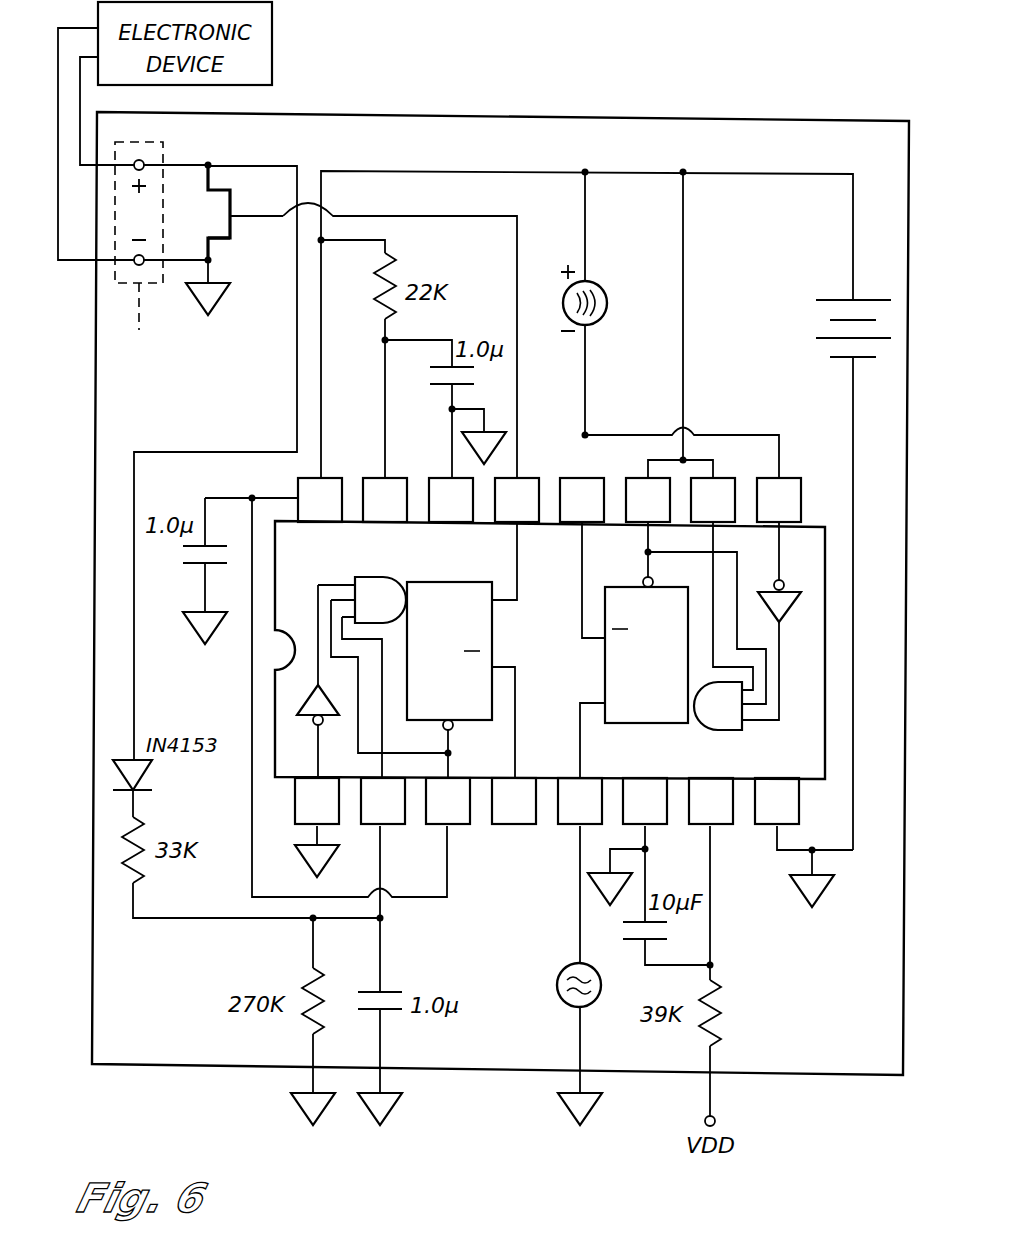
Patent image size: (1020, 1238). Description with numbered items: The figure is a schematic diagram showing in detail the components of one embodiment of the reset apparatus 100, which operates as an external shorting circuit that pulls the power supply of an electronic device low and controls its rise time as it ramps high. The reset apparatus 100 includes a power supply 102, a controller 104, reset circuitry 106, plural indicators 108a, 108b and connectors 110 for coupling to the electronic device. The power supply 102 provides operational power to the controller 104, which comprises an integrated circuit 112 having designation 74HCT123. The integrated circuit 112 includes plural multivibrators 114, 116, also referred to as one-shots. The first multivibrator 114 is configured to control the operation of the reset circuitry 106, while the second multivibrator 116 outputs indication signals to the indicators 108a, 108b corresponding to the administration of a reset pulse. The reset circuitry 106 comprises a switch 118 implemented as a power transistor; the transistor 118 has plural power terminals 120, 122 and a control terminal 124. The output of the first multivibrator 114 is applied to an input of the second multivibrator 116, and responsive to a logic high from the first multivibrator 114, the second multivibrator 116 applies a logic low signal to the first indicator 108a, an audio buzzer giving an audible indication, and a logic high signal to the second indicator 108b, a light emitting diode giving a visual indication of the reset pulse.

The reset apparatus 100 is at (656, 112).
The power supply 102 is at (818, 282).
The controller 104 is at (824, 505).
The reset circuitry 106 is at (259, 446).
The first indicator 108a is at (664, 254).
The second indicator 108b is at (566, 963).
The connectors 110 is at (137, 254).
The integrated circuit 112 is at (284, 779).
The first multivibrator 114 is at (495, 637).
The second multivibrator 116 is at (605, 672).
The switch 118 is at (244, 234).
The power terminal 120 is at (208, 178).
The power terminal 122 is at (214, 249).
The control terminal 124 is at (243, 212).